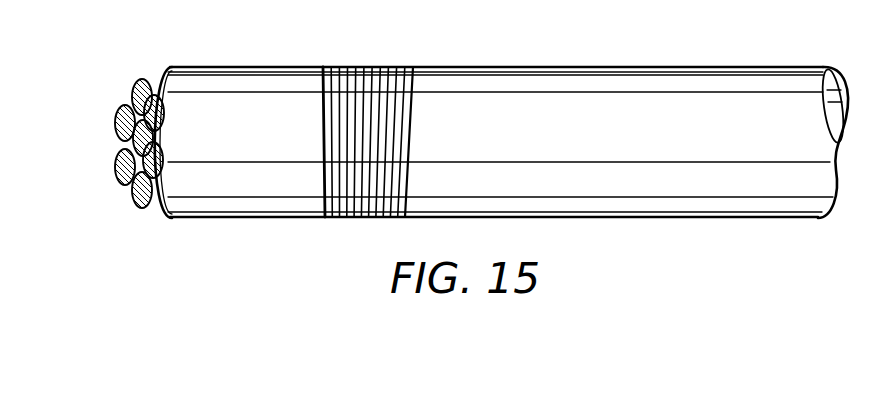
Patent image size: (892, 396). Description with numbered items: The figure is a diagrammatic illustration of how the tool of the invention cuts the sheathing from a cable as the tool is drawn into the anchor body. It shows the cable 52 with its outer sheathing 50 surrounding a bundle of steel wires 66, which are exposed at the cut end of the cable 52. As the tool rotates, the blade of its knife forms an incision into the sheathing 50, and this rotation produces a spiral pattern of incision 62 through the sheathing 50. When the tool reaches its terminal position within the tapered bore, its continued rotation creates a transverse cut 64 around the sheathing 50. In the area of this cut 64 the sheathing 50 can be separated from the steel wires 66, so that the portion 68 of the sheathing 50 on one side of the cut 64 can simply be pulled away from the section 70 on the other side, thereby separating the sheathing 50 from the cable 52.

The sheathing 50 is at (238, 70).
The cable 52 is at (680, 68).
The spiral pattern of incision 62 is at (421, 98).
The transverse cut 64 is at (313, 80).
The steel wires 66 is at (120, 163).
The portion 68 is at (673, 212).
The section 70 is at (255, 210).